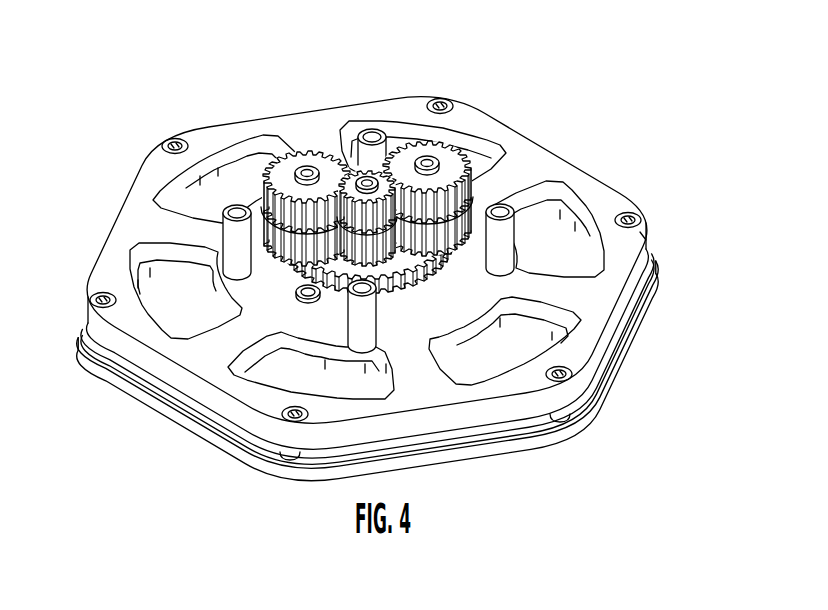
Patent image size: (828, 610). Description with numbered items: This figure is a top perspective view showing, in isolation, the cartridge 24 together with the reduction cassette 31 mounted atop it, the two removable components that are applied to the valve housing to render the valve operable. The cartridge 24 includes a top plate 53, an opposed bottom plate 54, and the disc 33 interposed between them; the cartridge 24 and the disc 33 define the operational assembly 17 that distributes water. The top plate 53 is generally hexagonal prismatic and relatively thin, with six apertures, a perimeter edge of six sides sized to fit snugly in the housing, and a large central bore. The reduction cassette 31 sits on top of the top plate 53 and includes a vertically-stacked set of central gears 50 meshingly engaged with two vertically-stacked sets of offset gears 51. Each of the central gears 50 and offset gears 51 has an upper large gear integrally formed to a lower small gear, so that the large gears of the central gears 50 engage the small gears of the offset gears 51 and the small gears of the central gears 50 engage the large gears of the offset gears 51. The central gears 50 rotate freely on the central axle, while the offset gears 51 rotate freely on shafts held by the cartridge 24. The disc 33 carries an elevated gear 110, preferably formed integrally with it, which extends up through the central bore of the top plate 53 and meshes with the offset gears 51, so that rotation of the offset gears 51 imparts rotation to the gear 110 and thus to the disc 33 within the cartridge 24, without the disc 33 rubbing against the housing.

The operational assembly 17 is at (84, 270).
The cartridge 24 is at (619, 188).
The reduction cassette 31 is at (467, 148).
The disc 33 is at (626, 338).
The central gears 50 is at (357, 168).
The offset gears 51 is at (278, 167).
The top plate 53 is at (648, 234).
The bottom plate 54 is at (652, 300).
The elevated gear 110 is at (433, 272).